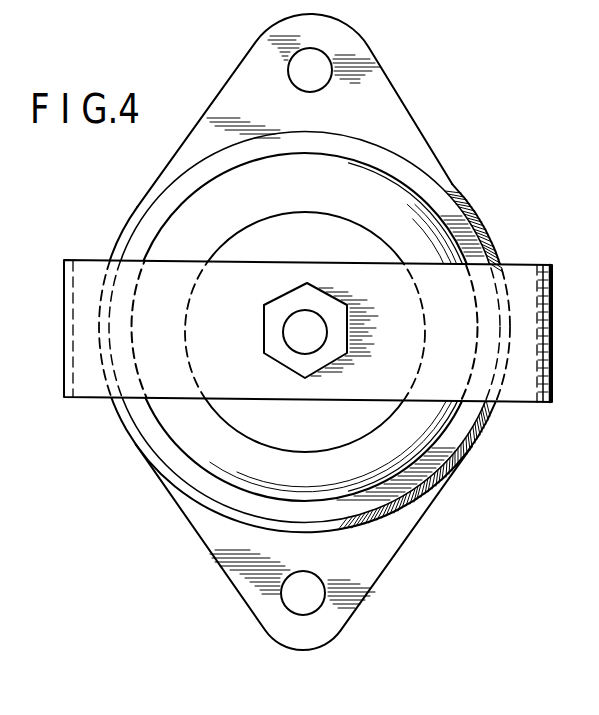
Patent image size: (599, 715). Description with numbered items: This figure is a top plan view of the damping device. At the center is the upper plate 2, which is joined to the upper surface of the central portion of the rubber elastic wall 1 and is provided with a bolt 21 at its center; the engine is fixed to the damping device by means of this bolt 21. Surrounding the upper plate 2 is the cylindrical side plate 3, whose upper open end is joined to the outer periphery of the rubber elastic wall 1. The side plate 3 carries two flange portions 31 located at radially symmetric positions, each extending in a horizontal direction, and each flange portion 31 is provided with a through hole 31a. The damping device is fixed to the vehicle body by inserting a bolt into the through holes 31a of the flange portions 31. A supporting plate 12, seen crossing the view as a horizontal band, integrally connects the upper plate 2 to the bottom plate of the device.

The rubber elastic wall 1 is at (411, 216).
The upper plate 2 is at (305, 314).
The cylindrical side plate 3 is at (304, 327).
The supporting plate 12 is at (308, 313).
The bolt 21 is at (339, 332).
The flange portion 31 is at (304, 332).
The through hole 31a is at (321, 347).